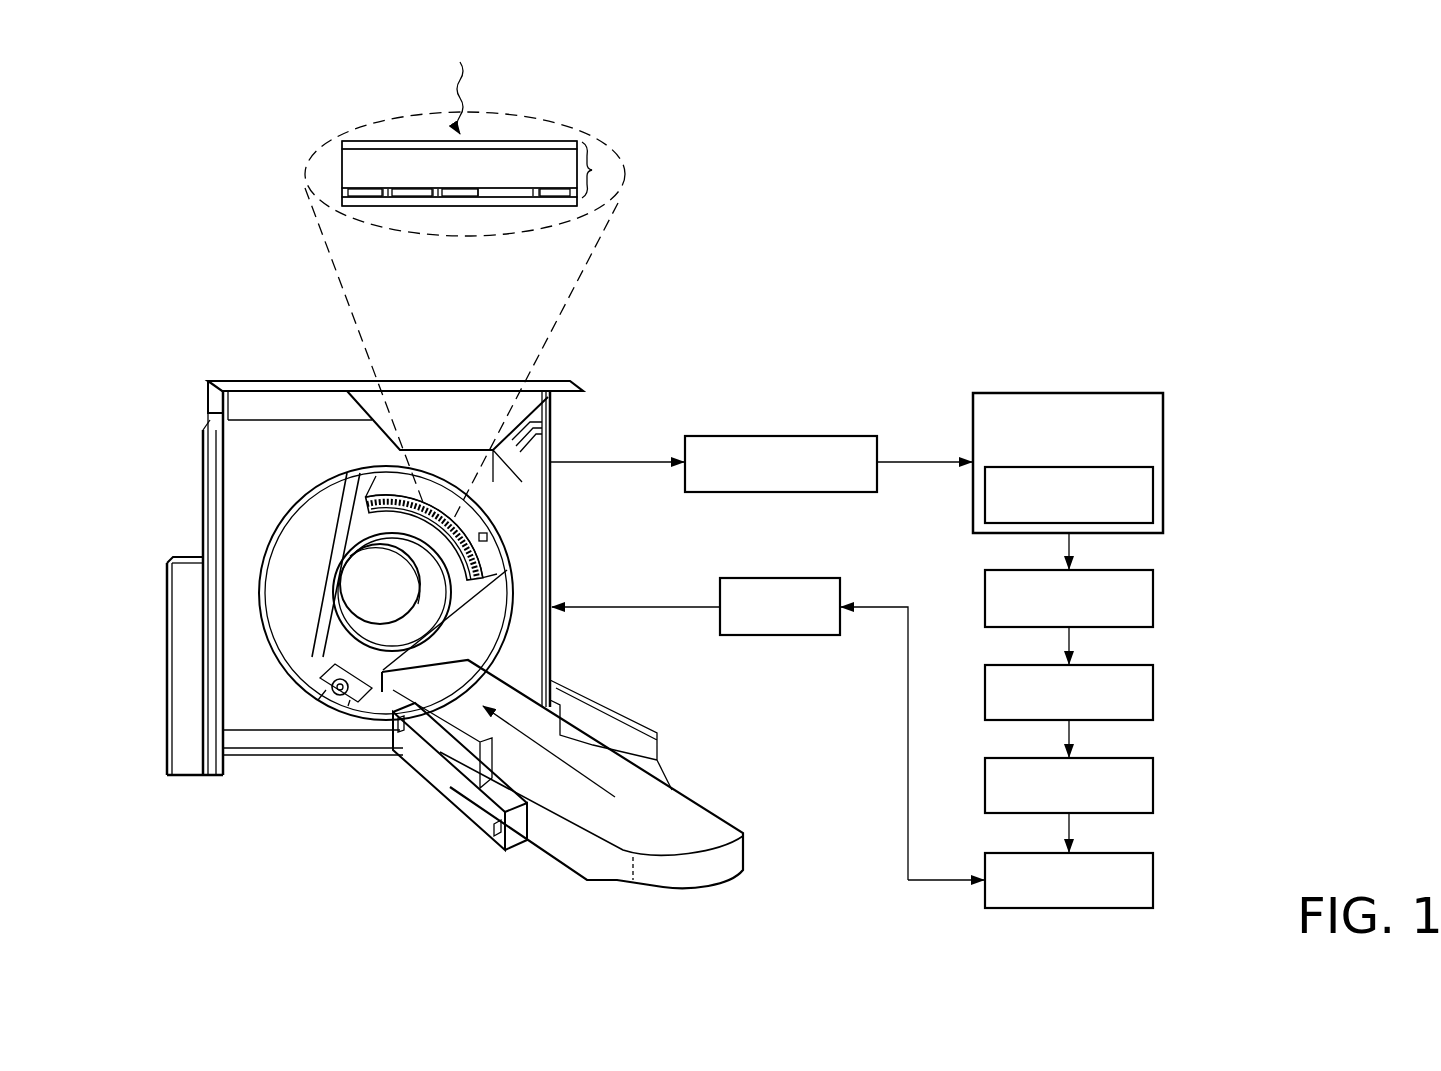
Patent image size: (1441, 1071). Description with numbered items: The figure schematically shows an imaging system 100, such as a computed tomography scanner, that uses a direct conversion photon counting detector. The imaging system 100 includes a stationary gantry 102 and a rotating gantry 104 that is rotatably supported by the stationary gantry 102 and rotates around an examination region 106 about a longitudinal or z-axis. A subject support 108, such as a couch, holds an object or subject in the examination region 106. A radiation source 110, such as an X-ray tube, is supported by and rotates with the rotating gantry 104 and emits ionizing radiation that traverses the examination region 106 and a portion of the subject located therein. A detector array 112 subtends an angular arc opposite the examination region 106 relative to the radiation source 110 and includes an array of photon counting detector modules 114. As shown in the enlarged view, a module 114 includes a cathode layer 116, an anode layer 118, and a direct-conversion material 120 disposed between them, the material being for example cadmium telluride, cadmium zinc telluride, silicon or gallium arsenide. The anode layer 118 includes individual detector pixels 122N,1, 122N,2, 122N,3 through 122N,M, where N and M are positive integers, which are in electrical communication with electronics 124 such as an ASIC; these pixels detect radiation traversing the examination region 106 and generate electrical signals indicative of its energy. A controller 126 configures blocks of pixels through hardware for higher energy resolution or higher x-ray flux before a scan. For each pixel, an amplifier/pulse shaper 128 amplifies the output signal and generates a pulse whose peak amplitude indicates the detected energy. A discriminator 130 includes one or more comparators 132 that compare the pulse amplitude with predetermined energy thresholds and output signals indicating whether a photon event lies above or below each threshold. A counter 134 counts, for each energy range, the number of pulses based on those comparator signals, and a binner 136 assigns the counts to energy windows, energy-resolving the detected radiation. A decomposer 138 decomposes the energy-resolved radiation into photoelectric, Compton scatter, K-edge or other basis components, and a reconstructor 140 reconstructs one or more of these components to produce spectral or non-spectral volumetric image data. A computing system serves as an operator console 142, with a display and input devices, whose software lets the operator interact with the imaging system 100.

The imaging system 100 is at (175, 155).
The stationary gantry 102 is at (218, 459).
The rotating gantry 104 is at (357, 541).
The examination region 106 is at (401, 599).
The subject support 108 is at (706, 821).
The radiation source 110 is at (339, 702).
The detector array 112 is at (495, 563).
The photon counting detector module 114 is at (556, 127).
The cathode layer 116 is at (342, 146).
The anode layer 118 is at (342, 190).
The direct-conversion material 120 is at (342, 176).
The detector pixel 122N,1 is at (362, 198).
The detector pixel 122N,2 is at (403, 198).
The detector pixel 122N,3 is at (467, 198).
The detector pixel 122N,M is at (558, 198).
The electronics 124 is at (578, 203).
The controller 126 is at (490, 537).
The amplifier/pulse shaper 128 is at (783, 434).
The discriminator 130 is at (1165, 430).
The comparators 132 is at (1155, 497).
The counter 134 is at (1155, 600).
The binner 136 is at (1155, 693).
The decomposer 138 is at (1155, 787).
The reconstructor 140 is at (1155, 881).
The operator console 142 is at (786, 636).